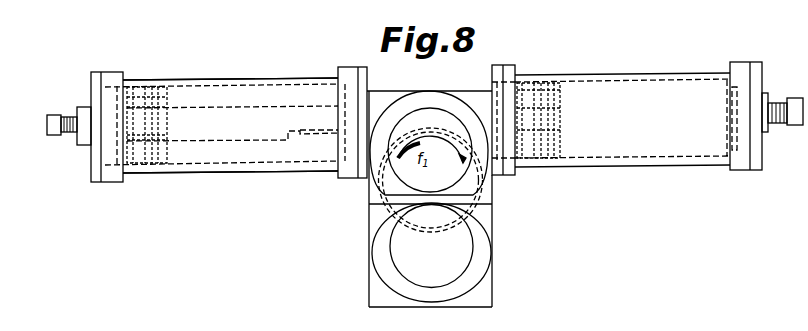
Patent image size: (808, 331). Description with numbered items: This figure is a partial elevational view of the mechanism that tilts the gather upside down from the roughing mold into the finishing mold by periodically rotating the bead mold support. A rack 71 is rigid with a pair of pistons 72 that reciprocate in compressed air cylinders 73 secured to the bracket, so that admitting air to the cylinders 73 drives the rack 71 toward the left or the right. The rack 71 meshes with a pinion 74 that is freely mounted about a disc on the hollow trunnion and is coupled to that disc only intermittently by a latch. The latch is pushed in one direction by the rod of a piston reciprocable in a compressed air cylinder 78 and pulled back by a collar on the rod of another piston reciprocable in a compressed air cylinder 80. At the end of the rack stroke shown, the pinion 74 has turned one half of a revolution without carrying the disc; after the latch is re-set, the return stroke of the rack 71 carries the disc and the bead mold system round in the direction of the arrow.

The rack 71 is at (373, 118).
The pistons 72 is at (137, 96).
The compressed air cylinders 73 is at (426, 123).
The pinion 74 is at (385, 202).
The compressed air cylinder 78 is at (450, 100).
The compressed air cylinder 80 is at (487, 250).